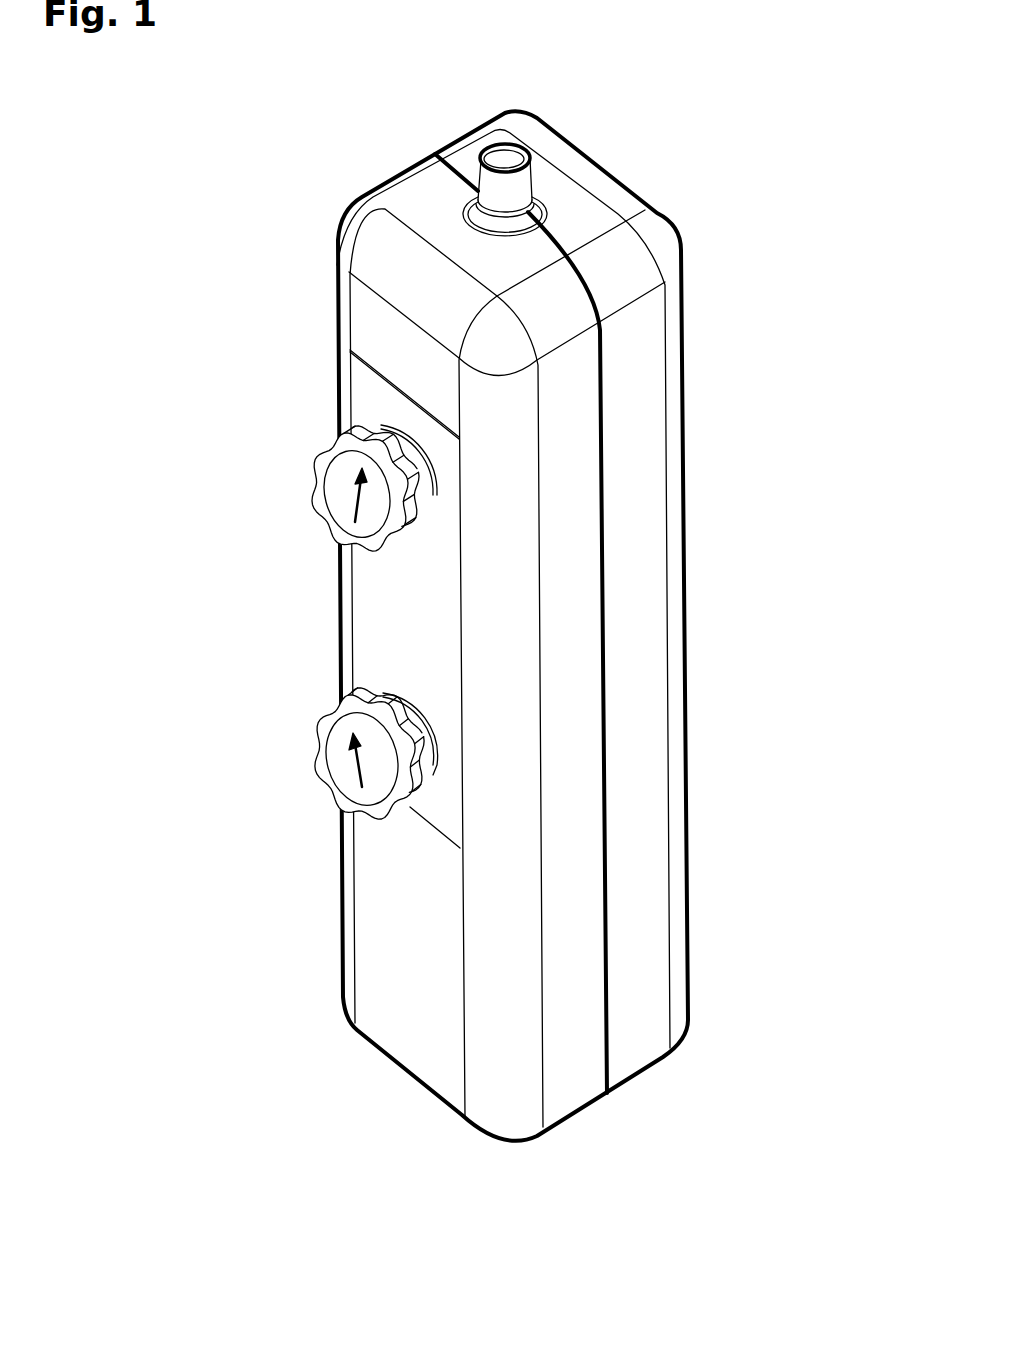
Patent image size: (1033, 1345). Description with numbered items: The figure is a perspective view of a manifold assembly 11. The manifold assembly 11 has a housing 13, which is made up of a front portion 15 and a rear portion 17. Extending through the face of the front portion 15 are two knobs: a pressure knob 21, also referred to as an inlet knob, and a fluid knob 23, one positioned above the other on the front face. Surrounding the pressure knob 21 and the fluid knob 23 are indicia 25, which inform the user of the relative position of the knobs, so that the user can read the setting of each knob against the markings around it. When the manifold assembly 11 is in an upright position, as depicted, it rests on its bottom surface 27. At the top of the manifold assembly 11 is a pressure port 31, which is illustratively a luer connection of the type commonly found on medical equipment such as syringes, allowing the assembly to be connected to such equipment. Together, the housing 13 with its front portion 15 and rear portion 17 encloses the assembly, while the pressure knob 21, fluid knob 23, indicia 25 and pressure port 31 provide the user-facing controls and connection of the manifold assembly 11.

The manifold assembly 11 is at (624, 625).
The housing 13 is at (624, 625).
The front portion 15 is at (388, 967).
The rear portion 17 is at (793, 333).
The pressure knob 21 is at (322, 453).
The fluid knob 23 is at (328, 715).
The indicia 25 is at (372, 657).
The bottom surface 27 is at (632, 1082).
The pressure port 31 is at (523, 178).